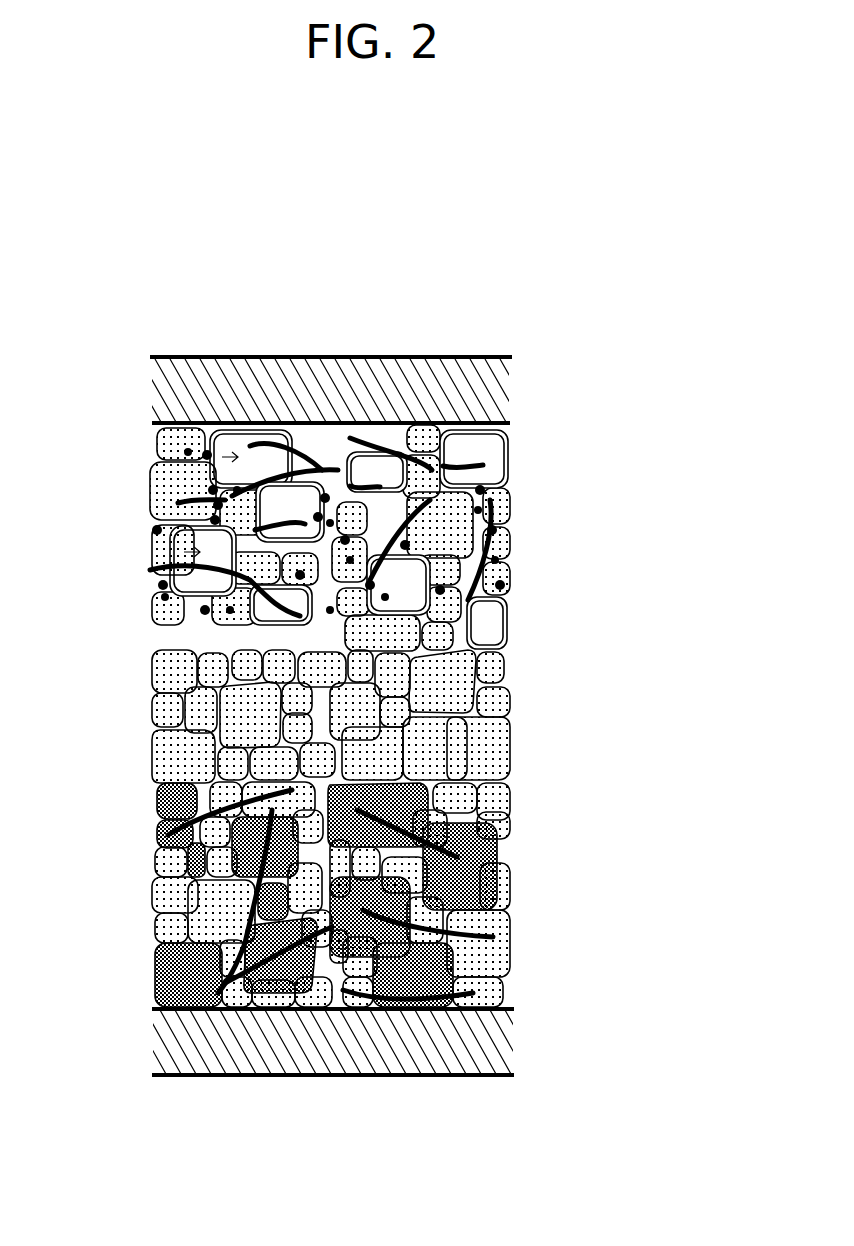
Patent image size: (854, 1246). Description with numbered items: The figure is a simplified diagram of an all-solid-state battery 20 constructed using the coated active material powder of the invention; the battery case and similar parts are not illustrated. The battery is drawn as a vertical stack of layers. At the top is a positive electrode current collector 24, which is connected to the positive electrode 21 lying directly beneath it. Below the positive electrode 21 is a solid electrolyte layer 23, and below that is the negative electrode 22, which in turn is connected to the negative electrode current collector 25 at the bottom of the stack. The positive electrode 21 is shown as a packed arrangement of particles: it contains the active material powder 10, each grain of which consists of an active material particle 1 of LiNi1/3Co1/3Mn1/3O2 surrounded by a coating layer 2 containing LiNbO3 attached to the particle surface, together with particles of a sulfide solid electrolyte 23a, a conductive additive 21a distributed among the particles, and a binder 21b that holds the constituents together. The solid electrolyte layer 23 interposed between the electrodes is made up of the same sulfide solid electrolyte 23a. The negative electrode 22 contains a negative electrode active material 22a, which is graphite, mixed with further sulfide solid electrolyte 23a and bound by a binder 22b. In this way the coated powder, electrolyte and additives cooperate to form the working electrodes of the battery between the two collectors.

The all-solid-state battery 20 is at (425, 210).
The positive electrode current collector 24 is at (495, 388).
The negative electrode current collector 25 is at (497, 1042).
The positive electrode 21 is at (385, 538).
The negative electrode 22 is at (389, 891).
The solid electrolyte layer 23 is at (624, 713).
The active material powder 10 is at (353, 537).
The active material particle 1 is at (487, 450).
The coating layer 2 is at (508, 473).
The conductive additive 21a is at (160, 526).
The binder 21b is at (500, 597).
The negative electrode active material 22a is at (168, 798).
The binder 22b is at (170, 835).
The sulfide solid electrolyte 23a is at (167, 492).